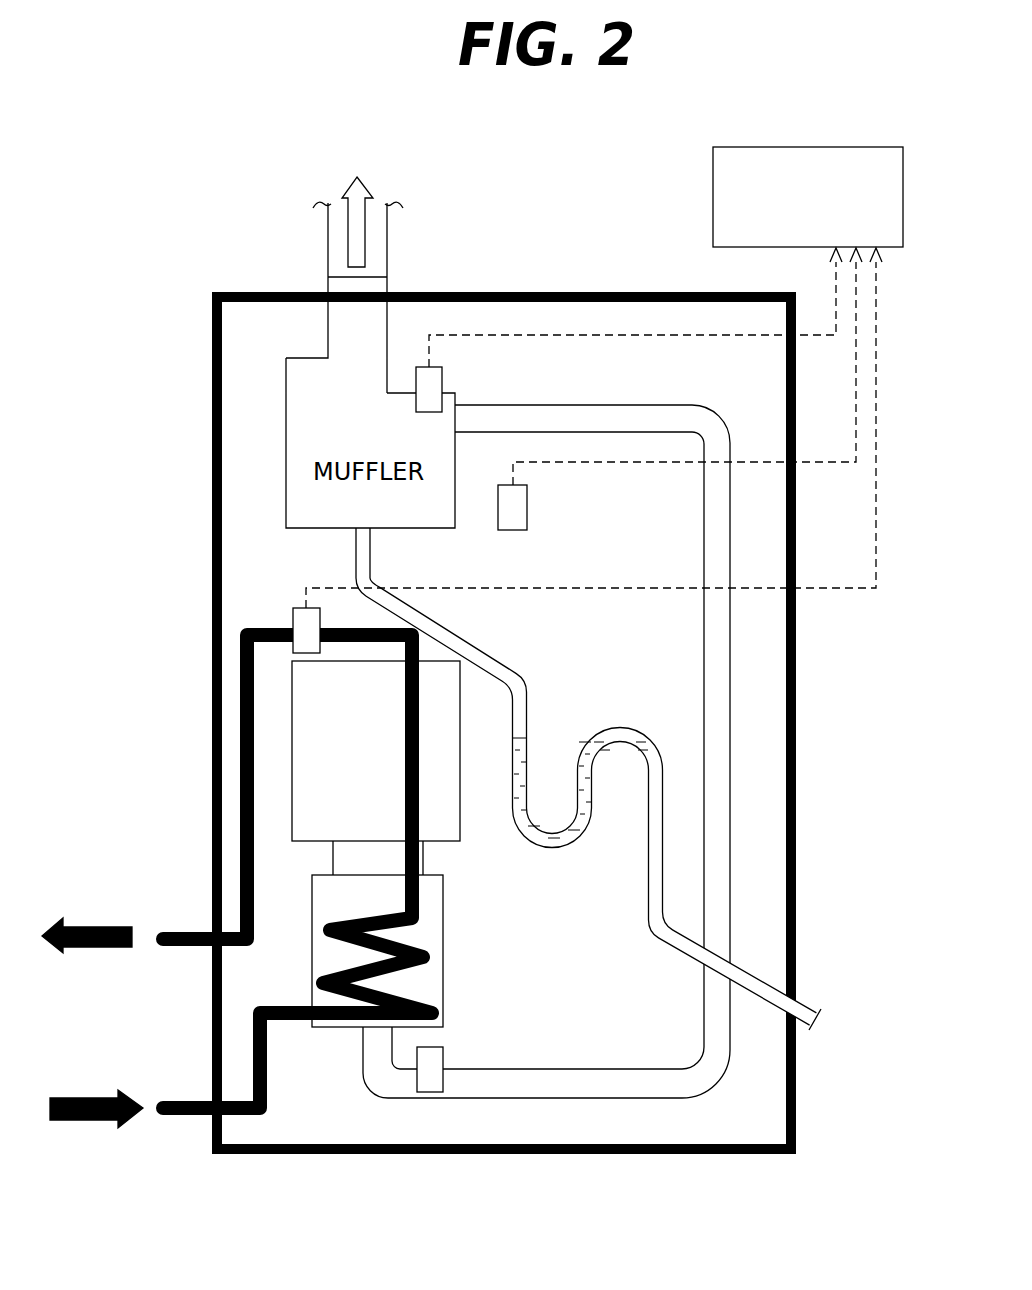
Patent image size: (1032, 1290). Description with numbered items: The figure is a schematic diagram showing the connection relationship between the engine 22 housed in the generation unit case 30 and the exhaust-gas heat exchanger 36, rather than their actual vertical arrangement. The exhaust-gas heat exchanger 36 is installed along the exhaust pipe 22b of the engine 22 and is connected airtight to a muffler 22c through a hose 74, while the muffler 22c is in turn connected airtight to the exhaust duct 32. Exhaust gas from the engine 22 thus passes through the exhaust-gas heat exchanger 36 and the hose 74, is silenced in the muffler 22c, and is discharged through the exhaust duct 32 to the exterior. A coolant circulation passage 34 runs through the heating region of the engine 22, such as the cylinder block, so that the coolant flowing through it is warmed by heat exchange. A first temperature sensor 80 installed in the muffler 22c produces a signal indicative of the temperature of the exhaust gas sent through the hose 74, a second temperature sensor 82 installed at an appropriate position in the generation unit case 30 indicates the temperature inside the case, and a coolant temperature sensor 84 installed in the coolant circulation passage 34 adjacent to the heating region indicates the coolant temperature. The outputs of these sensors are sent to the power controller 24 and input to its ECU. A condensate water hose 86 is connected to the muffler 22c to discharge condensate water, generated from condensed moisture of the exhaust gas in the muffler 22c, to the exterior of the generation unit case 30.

The engine 22 is at (459, 790).
The exhaust pipe 22b is at (423, 850).
The muffler 22c is at (328, 345).
The power controller 24 is at (745, 147).
The generation unit case 30 is at (535, 292).
The exhaust duct 32 is at (387, 258).
The coolant circulation passage 34 is at (187, 948).
The exhaust-gas heat exchanger 36 is at (443, 982).
The hose 74 is at (704, 668).
The first temperature sensor 80 is at (442, 375).
The second temperature sensor 82 is at (520, 530).
The coolant temperature sensor 84 is at (300, 607).
The condensate water hose 86 is at (648, 897).